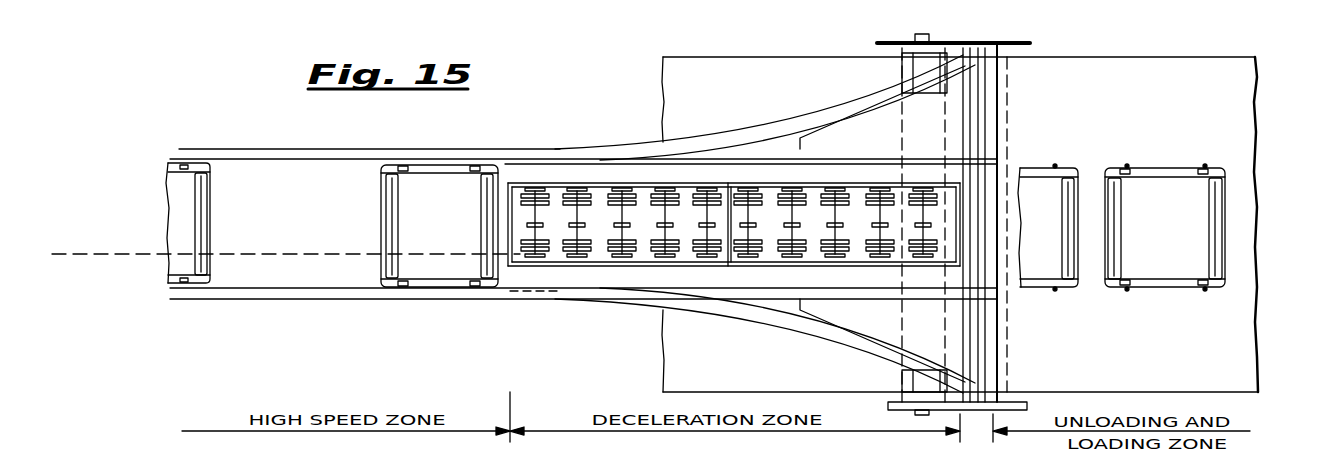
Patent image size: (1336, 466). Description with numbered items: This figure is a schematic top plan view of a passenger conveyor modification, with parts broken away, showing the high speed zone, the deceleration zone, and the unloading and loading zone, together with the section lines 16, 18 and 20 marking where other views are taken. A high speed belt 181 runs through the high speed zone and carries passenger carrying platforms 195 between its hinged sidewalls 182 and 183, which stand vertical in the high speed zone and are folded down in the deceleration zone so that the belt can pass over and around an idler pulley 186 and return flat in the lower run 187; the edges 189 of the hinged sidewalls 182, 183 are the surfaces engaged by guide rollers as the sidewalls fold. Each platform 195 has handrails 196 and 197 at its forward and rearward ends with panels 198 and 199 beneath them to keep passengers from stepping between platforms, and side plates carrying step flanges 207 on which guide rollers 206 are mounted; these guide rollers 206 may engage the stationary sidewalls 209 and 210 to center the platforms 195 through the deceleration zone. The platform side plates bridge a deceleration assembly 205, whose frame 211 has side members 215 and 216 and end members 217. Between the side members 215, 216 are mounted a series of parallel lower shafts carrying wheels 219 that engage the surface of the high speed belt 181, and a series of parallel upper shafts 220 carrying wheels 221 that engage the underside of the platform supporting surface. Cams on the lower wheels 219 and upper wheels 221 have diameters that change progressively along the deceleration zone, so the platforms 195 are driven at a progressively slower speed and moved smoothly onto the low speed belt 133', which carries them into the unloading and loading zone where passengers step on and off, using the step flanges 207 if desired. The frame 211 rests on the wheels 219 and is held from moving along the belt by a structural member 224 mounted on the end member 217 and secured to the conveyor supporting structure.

The section line 16- 16 is at (165, 254).
The section line 18- 18 is at (440, 462).
The section line 20- 20 is at (735, 462).
The low speed belt 133' is at (960, 213).
The high speed belt 181 is at (368, 177).
The hinged sidewall 182 is at (425, 161).
The hinged sidewall 183 is at (433, 299).
The idler pulley 186 is at (900, 379).
The lower run 187 is at (663, 362).
The edges of the hinged sidewalls 189 is at (652, 145).
The passenger carrying platform 195 is at (185, 180).
The handrail 196 is at (1206, 190).
The handrail 197 is at (1125, 170).
The panel 198 is at (1212, 212).
The panel 199 is at (1114, 205).
The deceleration assembly 205 is at (504, 178).
The guide roller 206 is at (1203, 287).
The step flange 207 is at (1150, 287).
The stationary sidewall 209 is at (714, 158).
The stationary sidewall 210 is at (770, 293).
The frame 211 is at (590, 268).
The side member 215 is at (597, 183).
The side member 216 is at (633, 268).
The end member 217 is at (958, 200).
The wheel 219 is at (547, 193).
The upper shaft 220 is at (748, 213).
The wheel 221 is at (835, 206).
The structural member 224 is at (1000, 168).